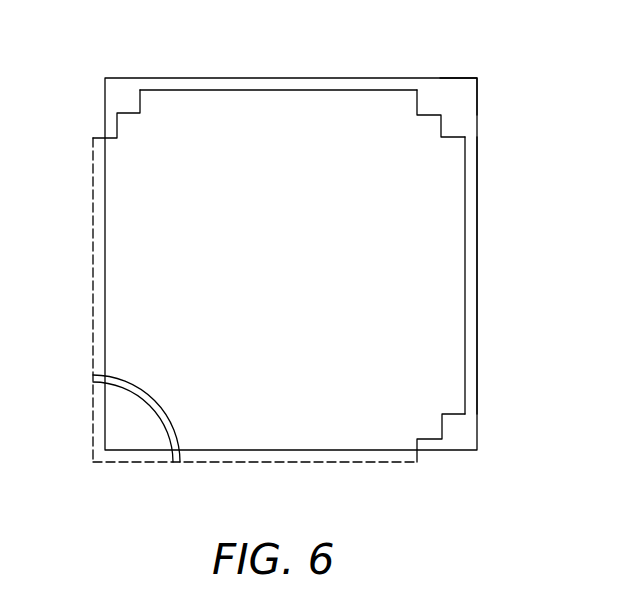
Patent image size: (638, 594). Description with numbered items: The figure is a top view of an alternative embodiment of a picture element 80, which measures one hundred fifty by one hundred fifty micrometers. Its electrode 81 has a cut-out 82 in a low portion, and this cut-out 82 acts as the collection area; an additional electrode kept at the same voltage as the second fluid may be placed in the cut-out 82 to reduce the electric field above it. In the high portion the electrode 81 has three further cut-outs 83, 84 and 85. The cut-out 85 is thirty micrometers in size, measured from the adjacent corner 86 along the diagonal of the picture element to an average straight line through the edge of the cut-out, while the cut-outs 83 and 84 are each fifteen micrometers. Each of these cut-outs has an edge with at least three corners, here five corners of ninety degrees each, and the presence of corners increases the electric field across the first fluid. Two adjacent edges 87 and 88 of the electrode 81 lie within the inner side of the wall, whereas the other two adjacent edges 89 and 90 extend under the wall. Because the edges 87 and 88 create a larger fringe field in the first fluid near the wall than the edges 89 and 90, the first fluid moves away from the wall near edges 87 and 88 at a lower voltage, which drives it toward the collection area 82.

The picture element 80 is at (517, 503).
The electrode 81 is at (450, 346).
The cut-out 82 is at (132, 430).
The cut-out 83 is at (460, 430).
The cut-out 84 is at (120, 94).
The cut-out 85 is at (460, 98).
The corner 86 is at (478, 77).
The edge 87 is at (276, 90).
The edge 88 is at (466, 273).
The edge 89 is at (93, 240).
The edge 90 is at (302, 464).